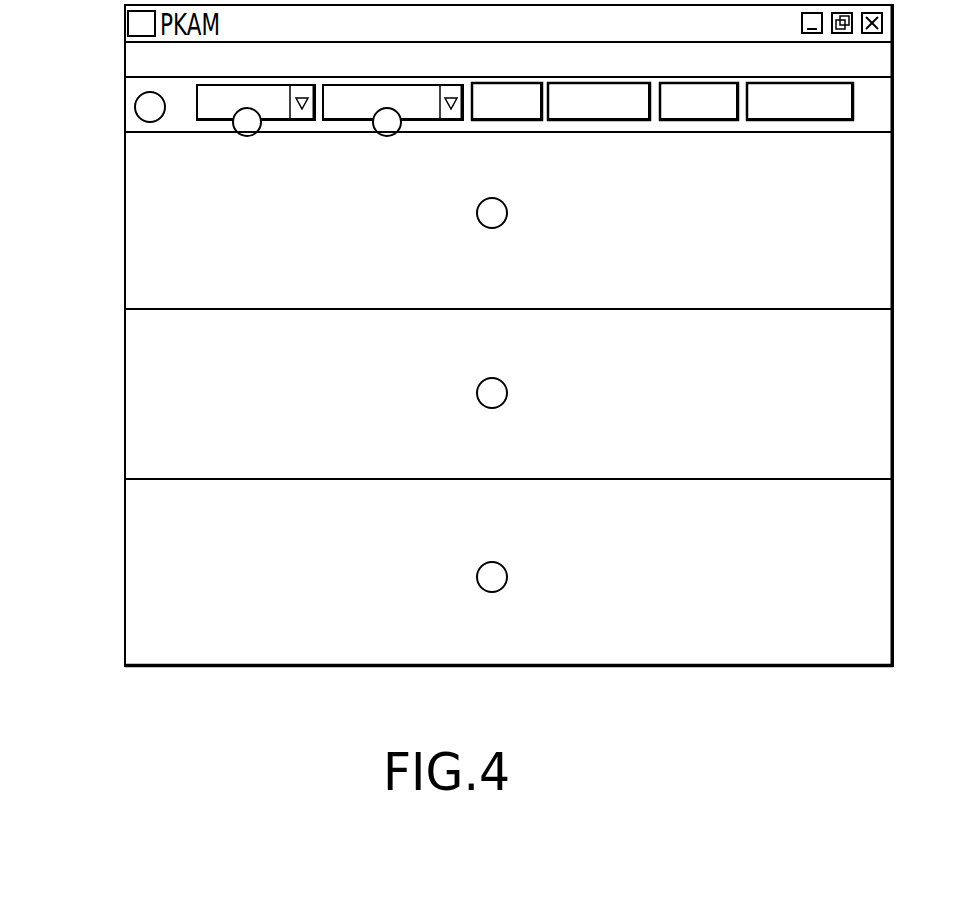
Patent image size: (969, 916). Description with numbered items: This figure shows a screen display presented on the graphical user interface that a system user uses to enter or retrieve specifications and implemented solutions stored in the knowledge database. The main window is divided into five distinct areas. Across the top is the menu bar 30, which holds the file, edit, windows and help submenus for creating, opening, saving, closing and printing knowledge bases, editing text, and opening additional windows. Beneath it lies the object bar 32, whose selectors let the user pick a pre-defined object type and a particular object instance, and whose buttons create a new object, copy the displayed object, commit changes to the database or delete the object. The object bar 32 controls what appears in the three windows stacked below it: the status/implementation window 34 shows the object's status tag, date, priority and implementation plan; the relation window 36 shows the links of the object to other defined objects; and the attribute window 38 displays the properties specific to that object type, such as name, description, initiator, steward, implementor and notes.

The menu bar 30 is at (131, 58).
The object bar 32 is at (135, 96).
The status/implementation window 34 is at (148, 237).
The relation window 36 is at (148, 357).
The attribute window 38 is at (148, 560).